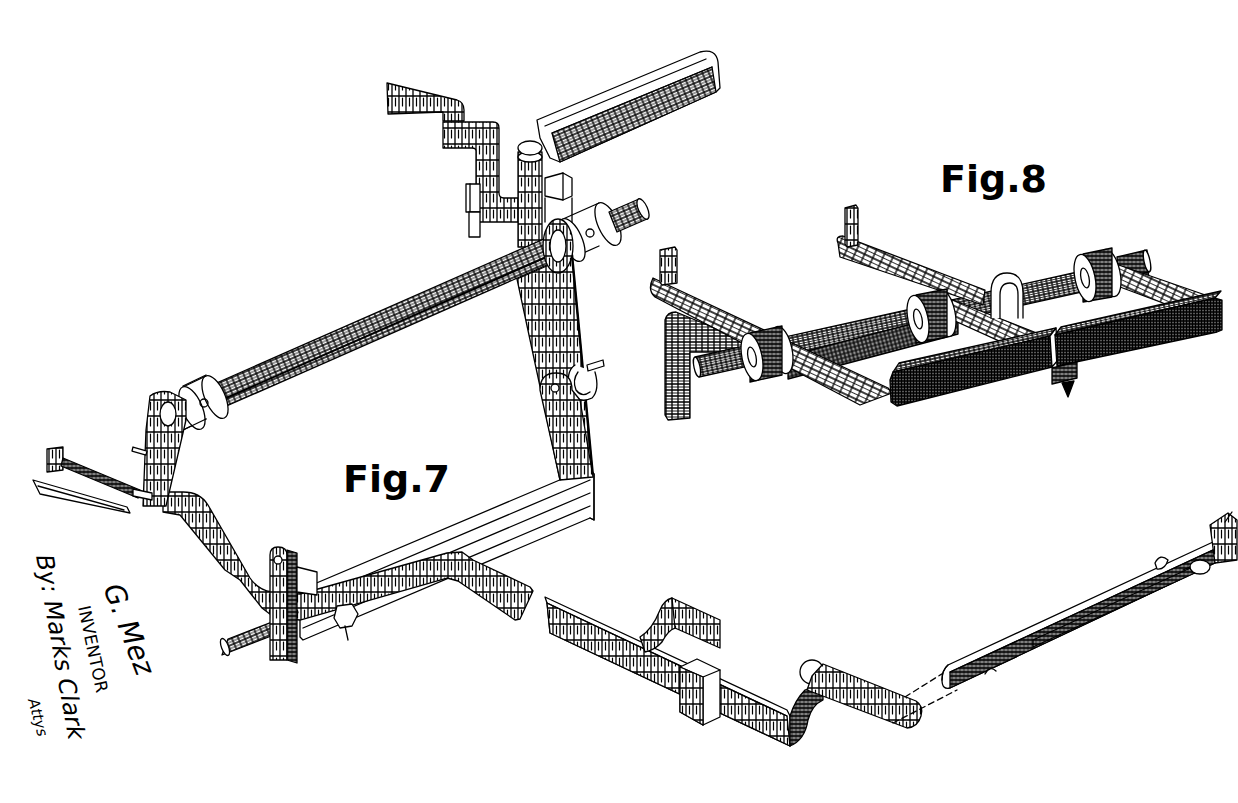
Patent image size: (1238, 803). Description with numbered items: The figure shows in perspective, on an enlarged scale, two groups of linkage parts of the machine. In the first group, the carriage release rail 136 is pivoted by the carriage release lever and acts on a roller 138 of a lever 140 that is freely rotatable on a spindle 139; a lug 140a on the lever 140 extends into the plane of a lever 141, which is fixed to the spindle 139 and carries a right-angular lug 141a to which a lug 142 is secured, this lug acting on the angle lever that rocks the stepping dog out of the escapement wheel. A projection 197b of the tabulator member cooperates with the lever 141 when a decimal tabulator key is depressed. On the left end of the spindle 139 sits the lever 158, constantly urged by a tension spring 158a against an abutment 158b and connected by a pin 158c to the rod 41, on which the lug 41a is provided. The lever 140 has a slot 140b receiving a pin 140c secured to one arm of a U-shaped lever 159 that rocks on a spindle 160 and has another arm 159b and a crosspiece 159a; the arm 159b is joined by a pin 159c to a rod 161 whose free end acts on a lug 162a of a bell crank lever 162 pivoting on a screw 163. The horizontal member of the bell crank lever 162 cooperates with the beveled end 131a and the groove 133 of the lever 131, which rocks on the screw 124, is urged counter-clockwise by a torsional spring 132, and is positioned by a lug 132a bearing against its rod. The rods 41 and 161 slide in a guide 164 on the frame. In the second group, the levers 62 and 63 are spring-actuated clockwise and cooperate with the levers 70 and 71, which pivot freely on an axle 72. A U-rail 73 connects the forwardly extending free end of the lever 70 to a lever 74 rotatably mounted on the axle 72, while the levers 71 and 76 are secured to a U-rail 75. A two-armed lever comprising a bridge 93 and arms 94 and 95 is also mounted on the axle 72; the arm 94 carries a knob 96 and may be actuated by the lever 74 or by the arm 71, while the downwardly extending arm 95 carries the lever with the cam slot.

In FIG. 7, the rod 41 is at (574, 610).
In FIG. 7, the lug 41a is at (700, 606).
In FIG. 8, the lever 62 is at (678, 262).
In FIG. 8, the lever 63 is at (859, 224).
In FIG. 8, the lever 70 is at (712, 298).
In FIG. 8, the lever 71 is at (900, 268).
In FIG. 8, the axle 72 is at (702, 378).
In FIG. 8, the U-rail 73 is at (966, 392).
In FIG. 8, the lever 74 is at (967, 338).
In FIG. 8, the U-rail 75 is at (1146, 348).
In FIG. 8, the lever 76 is at (1163, 287).
In FIG. 8, the bridge 93 is at (890, 355).
In FIG. 8, the arm 94 is at (1056, 381).
In FIG. 8, the arm 95 is at (690, 416).
In FIG. 8, the knob 96 is at (1074, 388).
In FIG. 7, the screw 124 is at (1202, 575).
In FIG. 7, the lever 131 is at (1034, 653).
In FIG. 7, the beveled end 131a is at (963, 688).
In FIG. 7, the torsional spring 132 is at (1104, 625).
In FIG. 7, the lug 132a is at (1162, 562).
In FIG. 7, the groove 133 is at (990, 676).
In FIG. 7, the carriage release rail 136 is at (658, 118).
In FIG. 7, the roller 138 is at (528, 142).
In FIG. 7, the spindle 139 is at (397, 333).
In FIG. 7, the lever 140 is at (555, 308).
In FIG. 7, the lug 140a is at (573, 191).
In FIG. 7, the slot 140b is at (588, 400).
In FIG. 7, the pin 140c is at (598, 363).
In FIG. 7, the lever 141 is at (476, 164).
In FIG. 7, the right-angular lug 141a is at (466, 190).
In FIG. 7, the lug 142 is at (476, 237).
In FIG. 7, the lever 158 is at (178, 463).
In FIG. 7, the tension spring 158a is at (90, 449).
In FIG. 7, the abutment 158b is at (140, 446).
In FIG. 7, the pin 158c is at (144, 505).
In FIG. 7, the U-shaped lever 159 is at (585, 451).
In FIG. 7, the crosspiece 159a is at (591, 520).
In FIG. 7, the arm 159b is at (258, 613).
In FIG. 7, the pin 159c is at (292, 553).
In FIG. 7, the spindle 160 is at (470, 527).
In FIG. 7, the rod 161 is at (348, 640).
In FIG. 7, the bell crank lever 162 is at (860, 679).
In FIG. 7, the lug 162a is at (795, 742).
In FIG. 7, the screw 163 is at (823, 663).
In FIG. 7, the guide 164 is at (697, 718).
In FIG. 7, the projection 197b is at (431, 94).